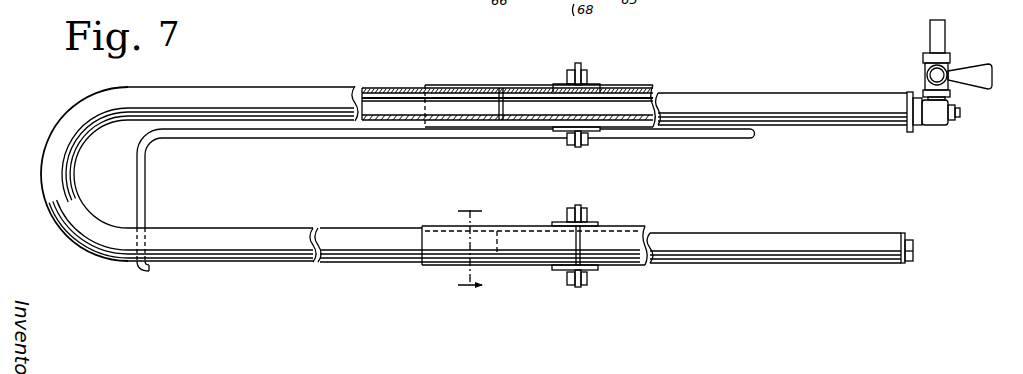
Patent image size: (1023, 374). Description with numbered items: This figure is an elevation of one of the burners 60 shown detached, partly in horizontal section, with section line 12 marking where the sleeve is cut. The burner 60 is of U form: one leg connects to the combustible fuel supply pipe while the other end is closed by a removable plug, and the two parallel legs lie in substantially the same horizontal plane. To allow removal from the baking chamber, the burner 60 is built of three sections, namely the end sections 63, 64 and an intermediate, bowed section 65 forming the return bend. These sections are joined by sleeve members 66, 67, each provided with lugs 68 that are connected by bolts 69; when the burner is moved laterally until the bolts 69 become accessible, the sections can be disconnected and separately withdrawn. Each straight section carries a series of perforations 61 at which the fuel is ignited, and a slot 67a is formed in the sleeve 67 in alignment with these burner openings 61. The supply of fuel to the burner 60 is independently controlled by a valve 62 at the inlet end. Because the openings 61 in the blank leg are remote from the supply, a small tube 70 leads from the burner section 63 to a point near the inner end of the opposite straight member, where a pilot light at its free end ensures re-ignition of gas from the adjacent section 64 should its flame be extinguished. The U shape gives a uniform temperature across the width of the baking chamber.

The section line 12- 12 is at (480, 248).
The burner 60 is at (300, 97).
The perforations 61 is at (408, 89).
The valve 62 is at (928, 74).
The end section 63 is at (768, 103).
The end section 64 is at (725, 239).
The intermediate bowed section 65 is at (68, 196).
The sleeve member 66 is at (590, 88).
The sleeve member 67 is at (513, 88).
The slot 67a is at (456, 71).
The lugs 68 is at (578, 67).
The bolts 69 is at (590, 71).
The small tube 70 is at (222, 132).